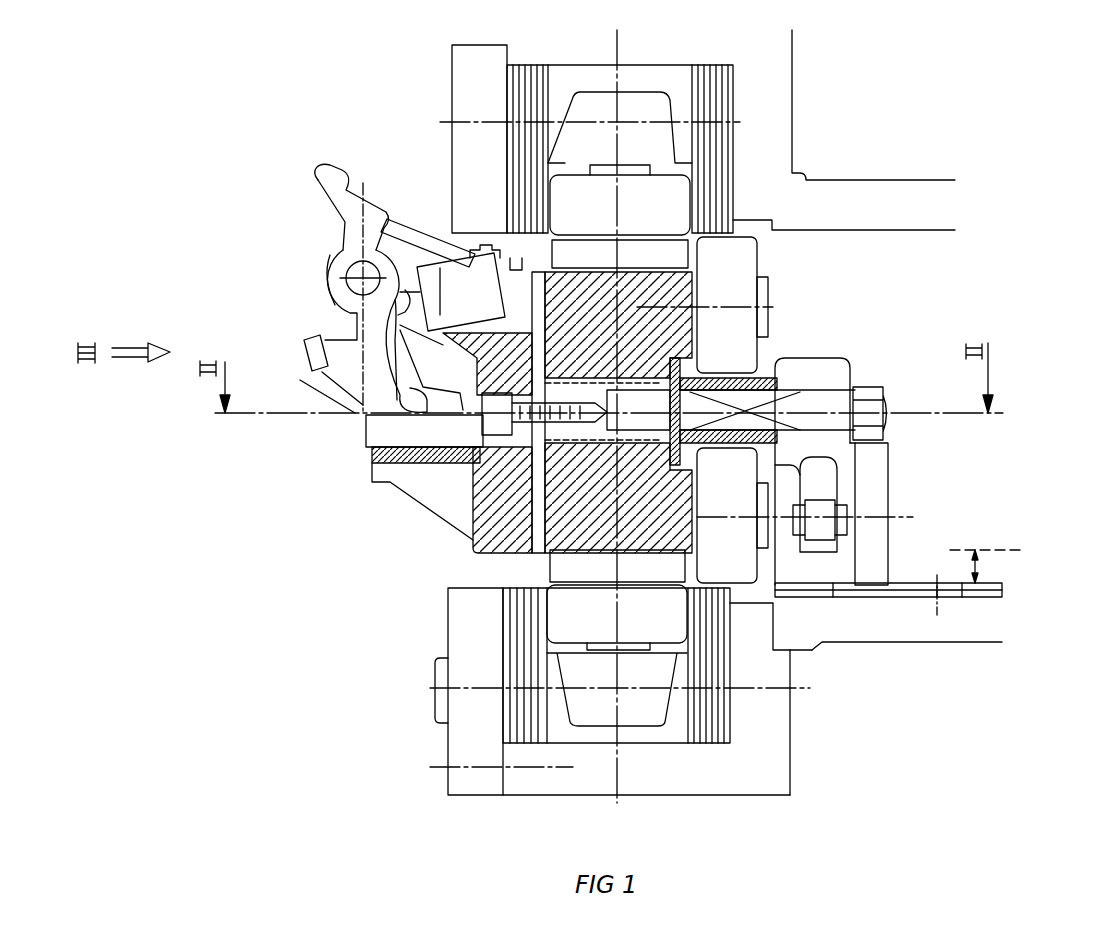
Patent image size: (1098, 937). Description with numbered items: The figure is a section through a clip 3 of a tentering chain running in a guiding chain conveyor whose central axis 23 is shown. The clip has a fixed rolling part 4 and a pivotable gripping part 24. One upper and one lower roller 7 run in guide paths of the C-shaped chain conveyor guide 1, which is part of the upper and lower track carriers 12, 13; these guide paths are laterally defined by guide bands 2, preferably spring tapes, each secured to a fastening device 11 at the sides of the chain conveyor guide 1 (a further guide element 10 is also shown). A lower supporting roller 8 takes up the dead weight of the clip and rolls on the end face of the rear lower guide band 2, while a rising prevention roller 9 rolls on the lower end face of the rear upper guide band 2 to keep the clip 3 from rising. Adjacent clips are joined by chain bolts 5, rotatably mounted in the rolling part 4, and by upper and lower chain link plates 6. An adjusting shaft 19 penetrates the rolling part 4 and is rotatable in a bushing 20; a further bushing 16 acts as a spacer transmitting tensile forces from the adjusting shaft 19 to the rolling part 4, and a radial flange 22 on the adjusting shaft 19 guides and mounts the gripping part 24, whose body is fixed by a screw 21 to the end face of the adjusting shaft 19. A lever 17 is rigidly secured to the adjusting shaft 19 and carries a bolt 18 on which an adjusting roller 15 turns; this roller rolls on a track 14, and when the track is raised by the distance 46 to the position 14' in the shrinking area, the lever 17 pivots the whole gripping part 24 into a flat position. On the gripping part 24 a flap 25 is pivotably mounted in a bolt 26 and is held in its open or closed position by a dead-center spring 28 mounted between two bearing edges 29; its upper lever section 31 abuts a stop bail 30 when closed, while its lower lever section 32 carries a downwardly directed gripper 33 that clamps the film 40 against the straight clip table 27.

The chain conveyor guide 1 is at (474, 100).
The guide band 2 is at (735, 125).
The clip 3 is at (355, 485).
The rolling part 4 is at (585, 568).
The chain bolt 5 is at (600, 643).
The chain link plate 6 is at (520, 575).
The roller 7 is at (570, 212).
The lower supporting roller 8 is at (735, 557).
The rising prevention roller 9 is at (737, 268).
The stator pole 10 is at (500, 670).
The fastening device 11 is at (432, 708).
The upper track carrier 12 is at (752, 75).
The lower track carrier 13 is at (865, 617).
The track 14 is at (888, 565).
The upper track 14' is at (995, 516).
The adjusting roller 15 is at (872, 475).
The bushing forming spacer 16 is at (790, 360).
The lever 17 is at (820, 365).
The bolt 18 is at (905, 515).
The adjusting shaft 19 is at (448, 475).
The bushing 20 is at (745, 383).
The screw 21 is at (380, 428).
The radial flange 22 is at (473, 527).
The central axis 23 is at (620, 777).
The gripping part 24 is at (390, 493).
The flap 25 is at (330, 270).
The bolt 26 is at (352, 272).
The clip table 27 is at (440, 402).
The dead-center spring 28 is at (442, 253).
The bearing edge 29 is at (457, 253).
The stop bail 30 is at (402, 230).
The upper lever section 31 is at (317, 176).
The lower lever section 32 is at (305, 350).
The gripper 33 is at (365, 400).
The film 40 is at (310, 416).
The distance 46 is at (983, 568).